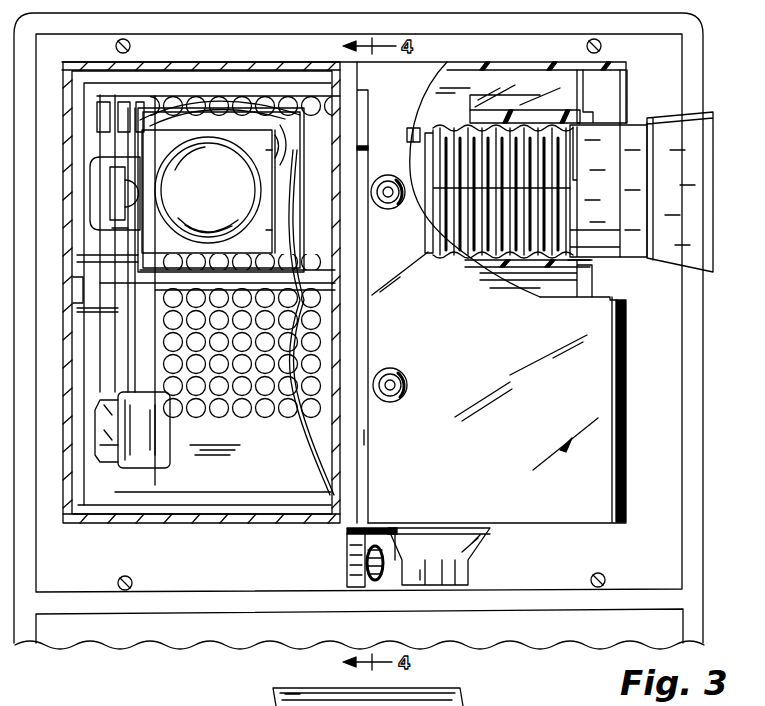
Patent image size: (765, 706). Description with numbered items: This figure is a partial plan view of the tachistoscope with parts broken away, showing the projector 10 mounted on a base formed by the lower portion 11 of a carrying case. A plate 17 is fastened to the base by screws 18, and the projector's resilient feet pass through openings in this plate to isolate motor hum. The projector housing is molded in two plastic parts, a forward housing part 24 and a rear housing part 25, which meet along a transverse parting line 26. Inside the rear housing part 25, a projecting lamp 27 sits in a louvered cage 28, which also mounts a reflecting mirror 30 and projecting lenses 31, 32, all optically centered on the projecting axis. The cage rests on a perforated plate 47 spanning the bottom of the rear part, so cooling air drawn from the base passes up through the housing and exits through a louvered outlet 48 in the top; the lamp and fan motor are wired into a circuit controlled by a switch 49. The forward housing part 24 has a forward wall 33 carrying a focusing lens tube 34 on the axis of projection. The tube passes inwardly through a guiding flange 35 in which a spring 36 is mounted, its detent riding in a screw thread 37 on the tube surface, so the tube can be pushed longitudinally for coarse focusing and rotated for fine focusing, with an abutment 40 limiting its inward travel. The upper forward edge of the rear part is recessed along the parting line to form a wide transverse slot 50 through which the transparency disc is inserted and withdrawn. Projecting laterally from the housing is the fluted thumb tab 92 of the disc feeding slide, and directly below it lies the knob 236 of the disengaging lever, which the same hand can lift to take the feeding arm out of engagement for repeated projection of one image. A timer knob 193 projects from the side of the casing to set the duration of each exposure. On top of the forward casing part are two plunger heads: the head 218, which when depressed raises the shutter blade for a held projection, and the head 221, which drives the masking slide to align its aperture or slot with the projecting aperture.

The projector 10 is at (585, 535).
The lower portion of carrying case 11 is at (704, 473).
The plate 17 is at (252, 577).
The screws 18 is at (133, 581).
The forward housing part 24 is at (546, 432).
The rear housing part 25 is at (185, 502).
The transverse parting line 26 is at (367, 113).
The projecting lamp 27 is at (209, 187).
The louvered cage 28 is at (140, 145).
The reflecting mirror 30 is at (120, 212).
The projecting lens 31 is at (273, 198).
The projecting lens 32 is at (308, 198).
The forward wall 33 is at (578, 287).
The focusing lens tube 34 is at (700, 165).
The guiding flange 35 is at (507, 112).
The spring 36 is at (552, 262).
The screw thread 37 is at (565, 210).
The abutment 40 is at (406, 134).
The perforated plate 47 is at (257, 477).
The louvered outlet 48 is at (458, 696).
The switch 49 is at (97, 432).
The transverse slot 50 is at (364, 432).
The thumb tab 92 is at (355, 559).
The timer knob 193 is at (450, 568).
The head 218 is at (404, 392).
The head 221 is at (392, 209).
The knob 236 is at (358, 580).